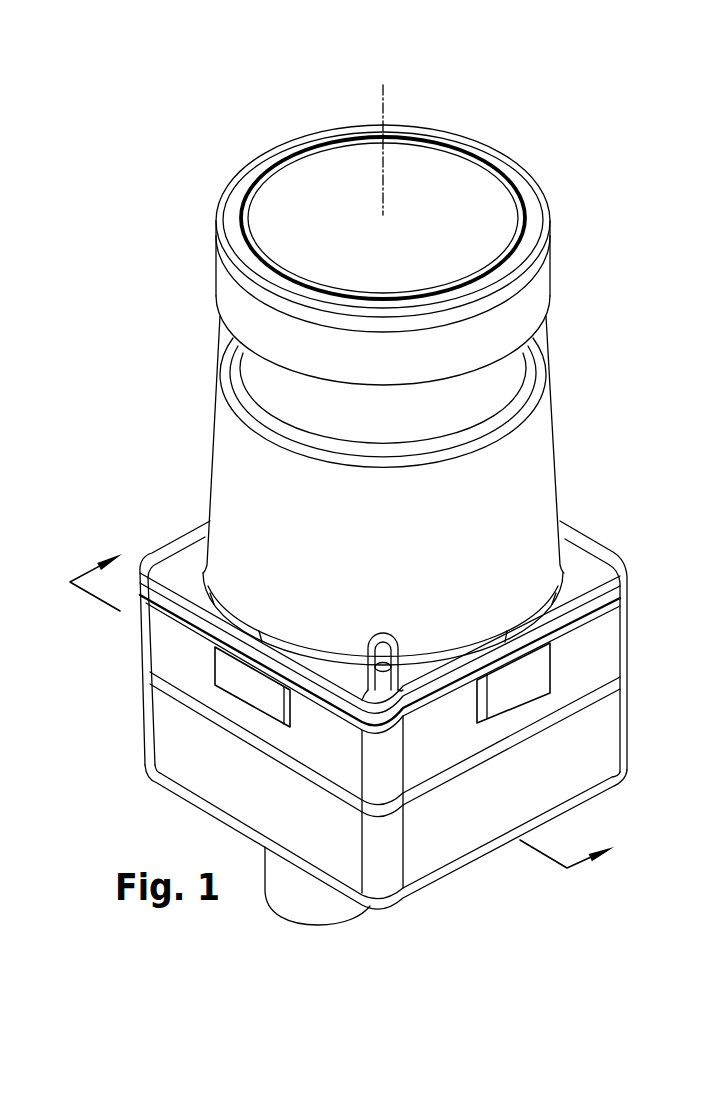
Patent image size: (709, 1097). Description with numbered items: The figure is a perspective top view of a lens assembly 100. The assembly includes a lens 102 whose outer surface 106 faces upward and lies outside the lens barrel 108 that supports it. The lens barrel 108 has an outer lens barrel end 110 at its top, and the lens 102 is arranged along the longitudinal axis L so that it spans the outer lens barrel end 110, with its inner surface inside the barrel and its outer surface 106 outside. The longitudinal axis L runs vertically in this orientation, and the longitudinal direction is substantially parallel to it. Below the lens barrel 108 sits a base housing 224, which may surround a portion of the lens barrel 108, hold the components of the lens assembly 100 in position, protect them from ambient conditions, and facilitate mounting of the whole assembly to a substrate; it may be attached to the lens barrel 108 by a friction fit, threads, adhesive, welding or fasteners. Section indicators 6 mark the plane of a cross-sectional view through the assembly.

The lens assembly 100 is at (164, 308).
The lens 102 is at (327, 165).
The outer surface 106 is at (450, 227).
The lens barrel 108 is at (407, 436).
The outer lens barrel end 110 is at (212, 157).
The base housing 224 is at (588, 490).
The section line 6- 6 is at (351, 701).
The longitudinal axis L is at (383, 92).